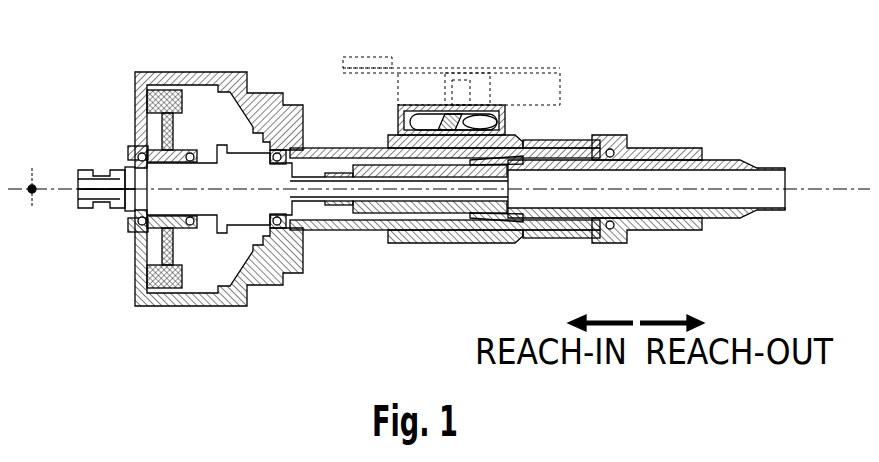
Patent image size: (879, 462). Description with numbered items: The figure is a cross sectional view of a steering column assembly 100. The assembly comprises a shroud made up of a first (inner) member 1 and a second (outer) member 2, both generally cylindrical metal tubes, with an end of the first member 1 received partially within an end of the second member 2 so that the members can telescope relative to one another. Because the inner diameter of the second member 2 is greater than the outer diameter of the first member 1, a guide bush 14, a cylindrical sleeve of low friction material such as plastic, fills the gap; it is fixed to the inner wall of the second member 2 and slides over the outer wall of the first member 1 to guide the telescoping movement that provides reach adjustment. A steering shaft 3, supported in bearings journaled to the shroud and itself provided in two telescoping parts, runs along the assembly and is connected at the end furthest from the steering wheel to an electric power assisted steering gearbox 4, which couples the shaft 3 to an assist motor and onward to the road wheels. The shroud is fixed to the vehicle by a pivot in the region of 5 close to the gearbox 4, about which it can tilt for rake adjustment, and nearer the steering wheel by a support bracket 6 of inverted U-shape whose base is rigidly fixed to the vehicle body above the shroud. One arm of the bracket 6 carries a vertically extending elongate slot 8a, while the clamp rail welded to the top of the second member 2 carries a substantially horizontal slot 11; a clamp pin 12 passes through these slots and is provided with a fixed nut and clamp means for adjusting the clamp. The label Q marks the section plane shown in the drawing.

The first (inner) member 1 is at (340, 230).
The second (outer) member 2 is at (433, 244).
The steering shaft 3 is at (722, 160).
The electric power assisted steering gearbox 4 is at (135, 283).
The pivot region 5 is at (36, 182).
The support bracket 6 is at (512, 118).
The slot 8a is at (463, 160).
The horizontal slot 11 is at (431, 118).
The clamp pin 12 is at (504, 121).
The guide bush 14 is at (405, 243).
The steering column assembly 100 is at (524, 252).
The cross-section plane Q is at (386, 133).